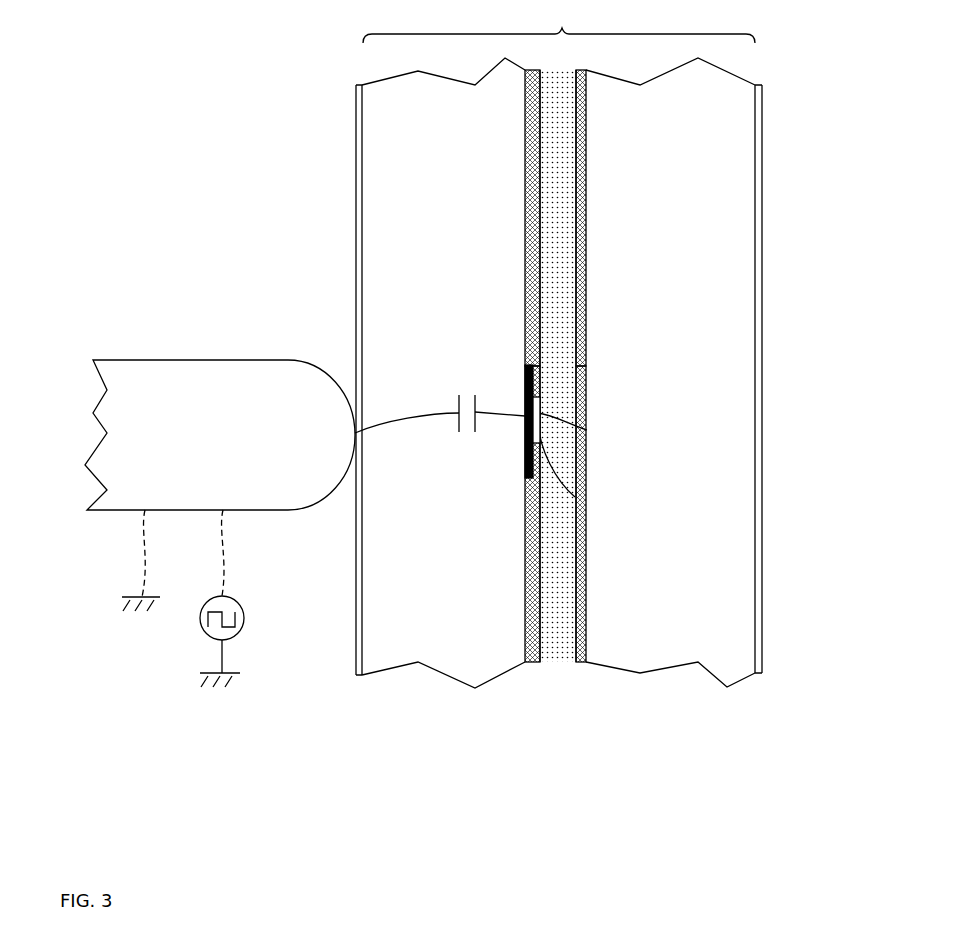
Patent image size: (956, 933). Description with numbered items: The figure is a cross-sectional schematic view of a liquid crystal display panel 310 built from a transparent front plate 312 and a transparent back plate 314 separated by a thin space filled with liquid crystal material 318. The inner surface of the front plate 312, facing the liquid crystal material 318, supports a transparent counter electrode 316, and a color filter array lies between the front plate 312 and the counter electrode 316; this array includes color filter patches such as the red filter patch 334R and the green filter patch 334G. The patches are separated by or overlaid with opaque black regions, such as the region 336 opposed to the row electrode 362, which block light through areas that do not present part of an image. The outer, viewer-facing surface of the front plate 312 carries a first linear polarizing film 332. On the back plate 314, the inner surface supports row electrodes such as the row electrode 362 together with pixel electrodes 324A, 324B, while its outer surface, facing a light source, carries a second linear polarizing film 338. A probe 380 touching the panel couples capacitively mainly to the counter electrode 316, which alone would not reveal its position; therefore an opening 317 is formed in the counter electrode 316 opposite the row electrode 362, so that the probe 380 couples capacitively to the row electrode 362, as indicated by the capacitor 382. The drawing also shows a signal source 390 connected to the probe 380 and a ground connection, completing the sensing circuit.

The liquid crystal display panel 310 is at (559, 21).
The transparent front plate 312 is at (376, 396).
The transparent back plate 314 is at (715, 404).
The transparent counter electrode 316 is at (474, 416).
The opening 317 is at (575, 497).
The liquid crystal material 318 is at (622, 425).
The pixel electrode 324A is at (584, 630).
The pixel electrode 324B is at (586, 156).
The first linear polarizing film 332 is at (356, 131).
The green filter patch 334G is at (525, 214).
The red filter patch 334R is at (530, 618).
The opaque black region 336 is at (526, 462).
The second linear polarizing film 338 is at (762, 196).
The row electrode 362 is at (587, 430).
The probe 380 is at (178, 360).
The capacitor 382 is at (457, 408).
The signal source 390 is at (198, 622).